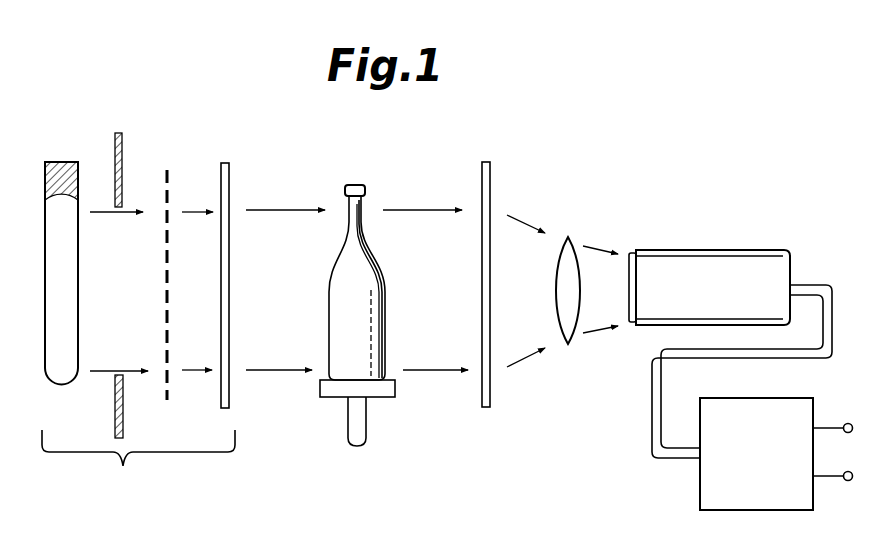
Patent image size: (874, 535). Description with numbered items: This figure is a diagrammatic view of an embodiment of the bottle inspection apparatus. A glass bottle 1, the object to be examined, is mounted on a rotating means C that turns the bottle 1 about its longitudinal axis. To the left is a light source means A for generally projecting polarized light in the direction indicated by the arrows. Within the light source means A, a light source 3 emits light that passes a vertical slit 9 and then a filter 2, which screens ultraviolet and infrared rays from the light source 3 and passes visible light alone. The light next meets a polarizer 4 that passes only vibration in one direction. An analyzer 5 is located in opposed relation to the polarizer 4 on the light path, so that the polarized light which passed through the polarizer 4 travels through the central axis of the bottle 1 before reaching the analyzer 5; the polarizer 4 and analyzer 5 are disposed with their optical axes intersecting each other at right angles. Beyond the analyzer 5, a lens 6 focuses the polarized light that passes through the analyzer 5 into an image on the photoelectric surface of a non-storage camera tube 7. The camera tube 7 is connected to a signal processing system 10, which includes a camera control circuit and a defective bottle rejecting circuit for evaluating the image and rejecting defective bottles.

The glass bottle 1 is at (357, 282).
The filter 2 is at (169, 182).
The light source 3 is at (57, 228).
The polarizer 4 is at (229, 235).
The analyzer 5 is at (490, 272).
The lens 6 is at (577, 300).
The non-storage camera tube 7 is at (709, 287).
The vertical slit 9 is at (122, 172).
The signal processing system 10 is at (776, 454).
The light source means A is at (138, 466).
The rotating means C is at (341, 425).